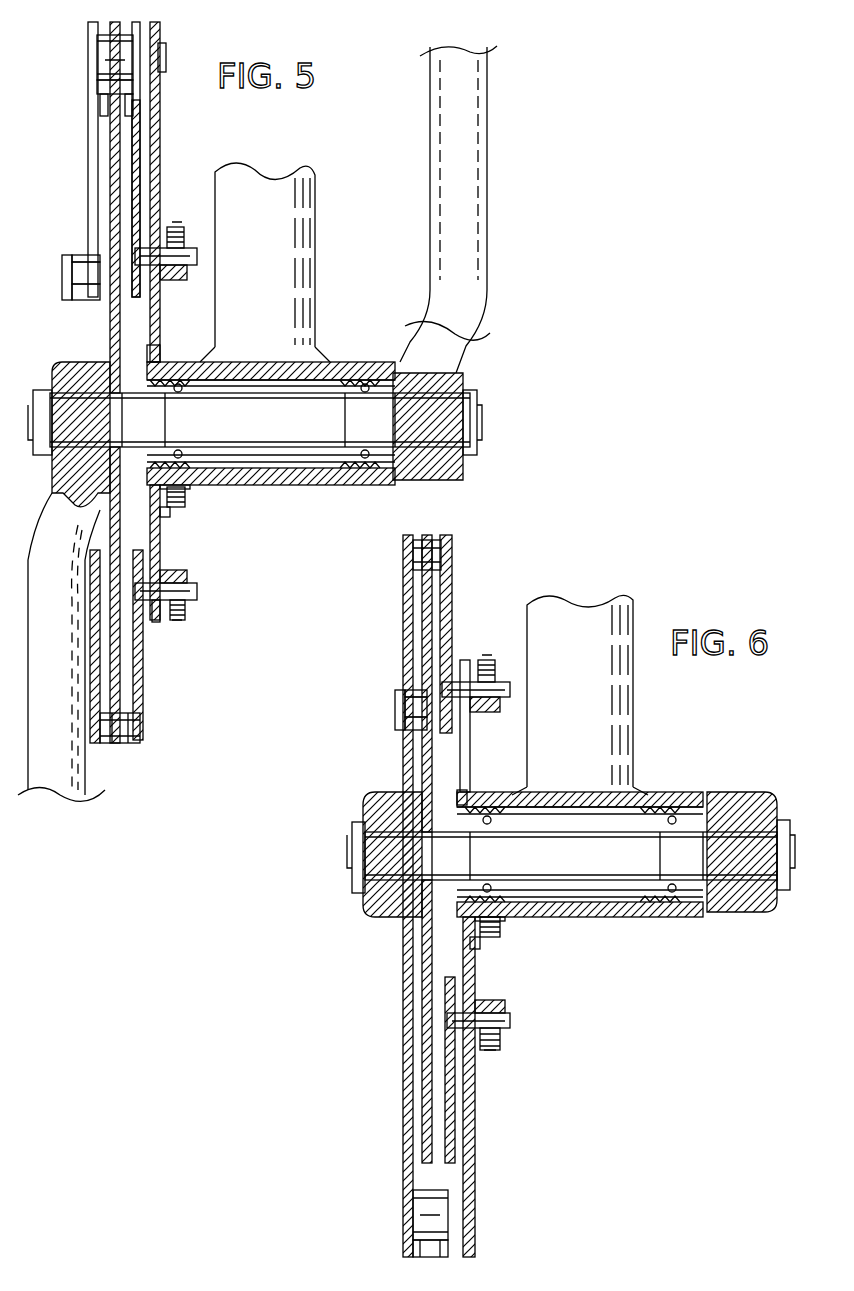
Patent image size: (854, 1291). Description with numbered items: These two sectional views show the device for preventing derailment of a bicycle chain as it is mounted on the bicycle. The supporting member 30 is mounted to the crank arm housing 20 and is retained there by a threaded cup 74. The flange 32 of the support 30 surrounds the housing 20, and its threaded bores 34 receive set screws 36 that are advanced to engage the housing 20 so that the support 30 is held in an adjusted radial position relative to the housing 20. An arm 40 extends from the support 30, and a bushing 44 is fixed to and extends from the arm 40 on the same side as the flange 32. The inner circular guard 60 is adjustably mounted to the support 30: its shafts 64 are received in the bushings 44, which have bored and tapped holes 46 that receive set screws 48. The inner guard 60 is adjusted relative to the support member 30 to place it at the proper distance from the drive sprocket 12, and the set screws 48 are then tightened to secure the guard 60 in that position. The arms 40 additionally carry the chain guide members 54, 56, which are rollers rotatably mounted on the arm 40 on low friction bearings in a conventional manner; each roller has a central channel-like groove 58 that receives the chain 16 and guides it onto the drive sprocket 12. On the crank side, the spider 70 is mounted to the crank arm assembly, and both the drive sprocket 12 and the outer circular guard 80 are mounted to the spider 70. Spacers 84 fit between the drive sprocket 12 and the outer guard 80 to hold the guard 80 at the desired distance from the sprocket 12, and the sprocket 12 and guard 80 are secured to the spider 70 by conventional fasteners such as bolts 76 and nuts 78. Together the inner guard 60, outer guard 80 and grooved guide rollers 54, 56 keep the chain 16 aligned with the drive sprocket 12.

In FIG. 5, the drive sprocket 12 is at (112, 148).
In FIG. 6, the drive sprocket 12 is at (424, 598).
In FIG. 5, the chain 16 is at (135, 745).
In FIG. 6, the chain 16 is at (440, 537).
In FIG. 5, the crank arm housing 20 is at (295, 487).
In FIG. 6, the crank arm housing 20 is at (620, 918).
In FIG. 5, the supporting member 30 is at (160, 625).
In FIG. 6, the supporting member 30 is at (465, 662).
In FIG. 5, the flange 32 is at (185, 495).
In FIG. 6, the flange 32 is at (500, 925).
In FIG. 5, the threaded bores 34 is at (175, 507).
In FIG. 6, the threaded bores 34 is at (490, 937).
In FIG. 5, the set screws 36 is at (165, 517).
In FIG. 6, the set screws 36 is at (478, 950).
In FIG. 5, the arm 40 is at (160, 330).
In FIG. 6, the arm 40 is at (475, 1140).
In FIG. 5, the bushings 44 is at (180, 275).
In FIG. 6, the bushings 44 is at (487, 712).
In FIG. 5, the bored and tapped holes 46 is at (185, 238).
In FIG. 6, the bored and tapped holes 46 is at (497, 672).
In FIG. 5, the set screws 48 is at (175, 230).
In FIG. 6, the set screws 48 is at (487, 662).
In FIG. 5, the chain guide member 54 is at (163, 45).
In FIG. 6, the chain guide member 56 is at (410, 1230).
In FIG. 5, the groove 58 is at (110, 38).
In FIG. 6, the groove 58 is at (445, 1262).
In FIG. 5, the inner circular guard 60 is at (140, 160).
In FIG. 6, the inner circular guard 60 is at (452, 590).
In FIG. 5, the shafts 64 is at (197, 256).
In FIG. 6, the shafts 64 is at (510, 690).
In FIG. 5, the spider 70 is at (112, 340).
In FIG. 6, the spider 70 is at (424, 768).
In FIG. 5, the threaded cup 74 is at (160, 356).
In FIG. 6, the threaded cup 74 is at (457, 805).
In FIG. 5, the bolts 76 is at (98, 300).
In FIG. 6, the bolts 76 is at (420, 700).
In FIG. 5, the nuts 78 is at (65, 280).
In FIG. 6, the nuts 78 is at (398, 705).
In FIG. 5, the outer circular guard 80 is at (88, 185).
In FIG. 6, the outer circular guard 80 is at (403, 622).
In FIG. 5, the spacers 84 is at (85, 258).
In FIG. 6, the spacers 84 is at (415, 730).